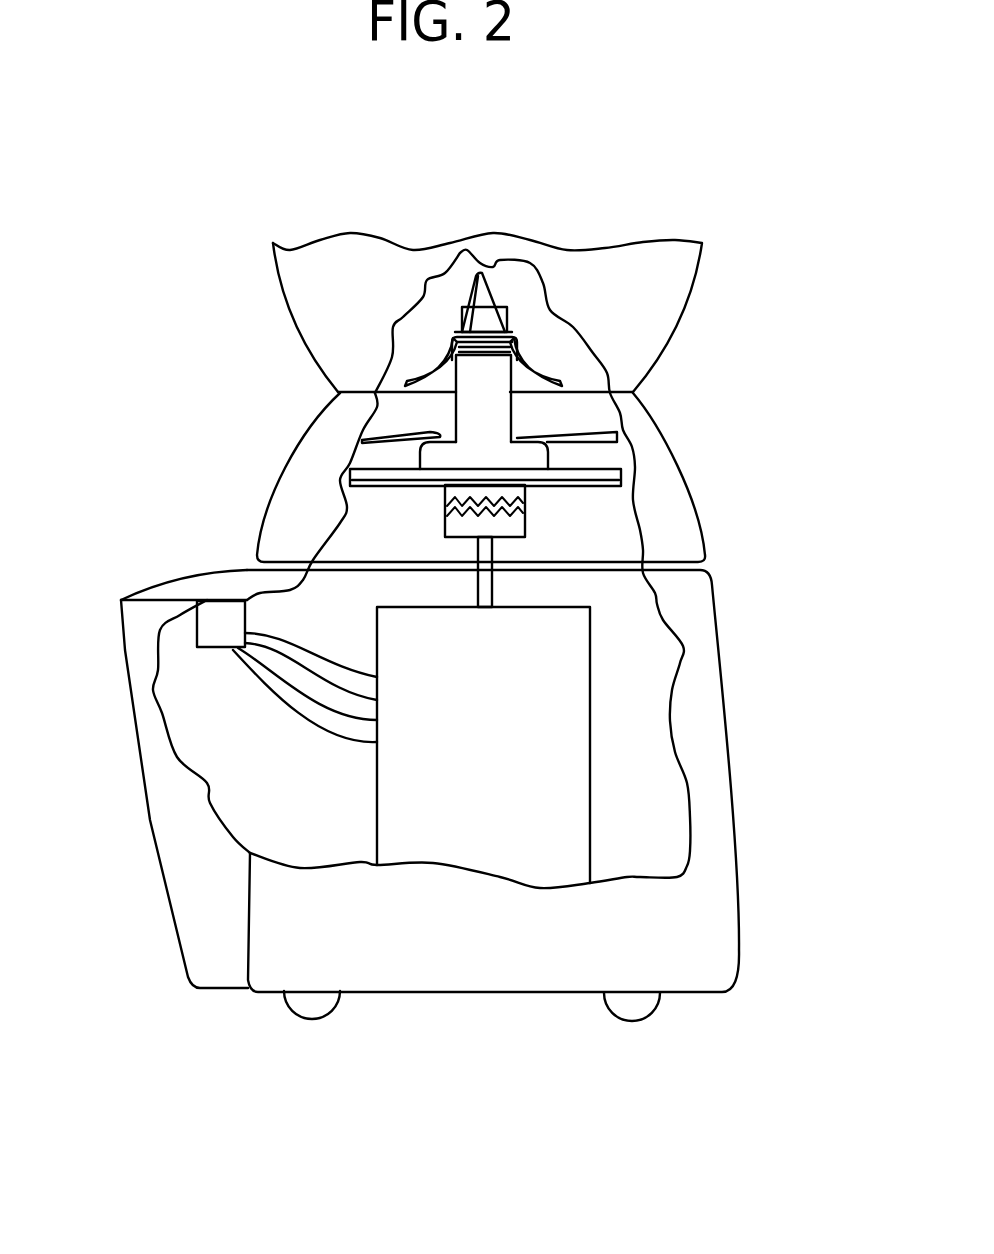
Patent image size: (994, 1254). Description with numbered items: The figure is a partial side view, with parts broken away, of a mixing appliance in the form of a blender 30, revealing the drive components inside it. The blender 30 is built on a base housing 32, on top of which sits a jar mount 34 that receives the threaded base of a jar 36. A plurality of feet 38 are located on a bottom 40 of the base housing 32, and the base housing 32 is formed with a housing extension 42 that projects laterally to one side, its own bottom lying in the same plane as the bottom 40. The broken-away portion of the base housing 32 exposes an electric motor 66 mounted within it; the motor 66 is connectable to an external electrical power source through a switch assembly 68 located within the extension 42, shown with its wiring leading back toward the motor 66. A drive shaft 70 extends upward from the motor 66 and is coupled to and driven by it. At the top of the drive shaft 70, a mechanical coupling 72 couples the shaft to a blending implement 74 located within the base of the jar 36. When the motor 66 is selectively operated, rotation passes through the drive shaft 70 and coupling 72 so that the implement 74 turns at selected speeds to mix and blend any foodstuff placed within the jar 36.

The blender 30 is at (750, 229).
The base housing 32 is at (756, 885).
The jar mount 34 is at (696, 471).
The jar 36 is at (686, 337).
The feet 38 is at (312, 1010).
The bottom 40 is at (693, 995).
The housing extension 42 is at (129, 797).
The electric motor 66 is at (576, 765).
The switch assembly 68 is at (212, 675).
The drive shaft 70 is at (487, 584).
The mechanical coupling 72 is at (428, 516).
The blending implement 74 is at (524, 299).